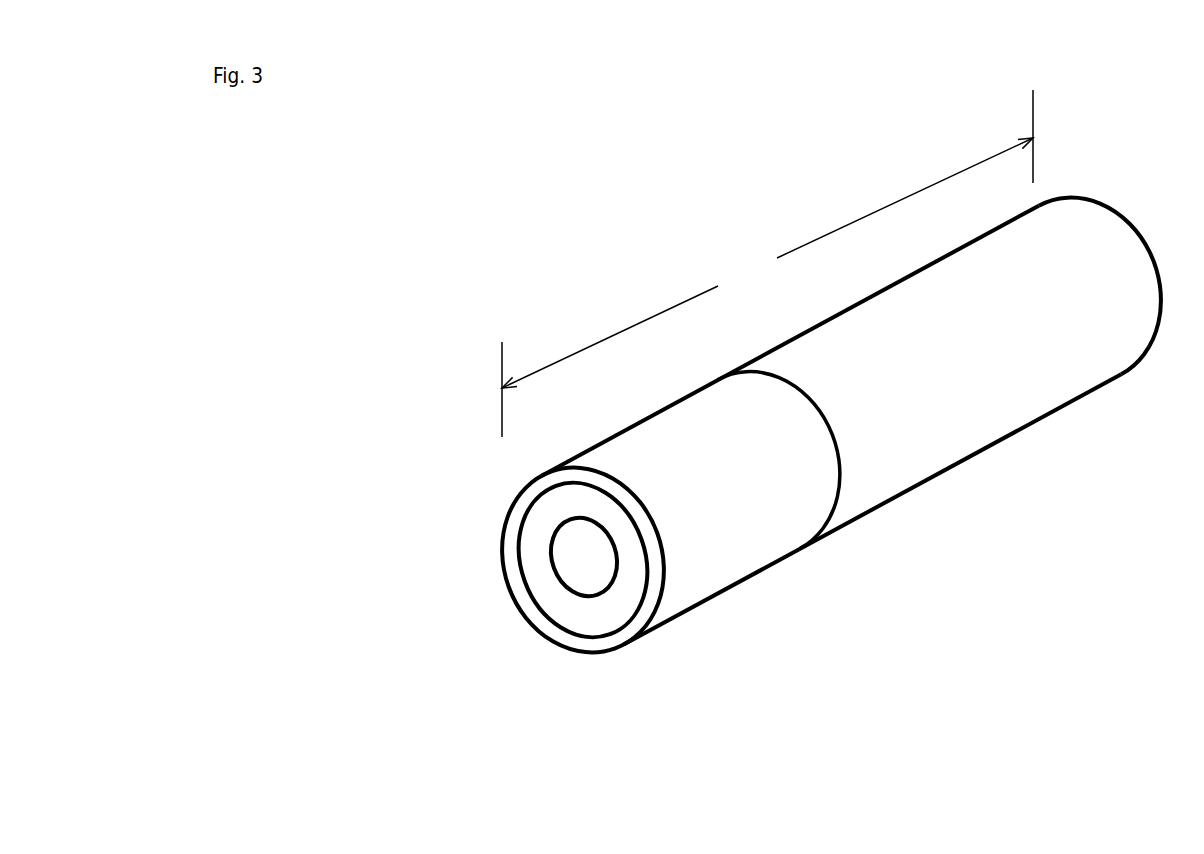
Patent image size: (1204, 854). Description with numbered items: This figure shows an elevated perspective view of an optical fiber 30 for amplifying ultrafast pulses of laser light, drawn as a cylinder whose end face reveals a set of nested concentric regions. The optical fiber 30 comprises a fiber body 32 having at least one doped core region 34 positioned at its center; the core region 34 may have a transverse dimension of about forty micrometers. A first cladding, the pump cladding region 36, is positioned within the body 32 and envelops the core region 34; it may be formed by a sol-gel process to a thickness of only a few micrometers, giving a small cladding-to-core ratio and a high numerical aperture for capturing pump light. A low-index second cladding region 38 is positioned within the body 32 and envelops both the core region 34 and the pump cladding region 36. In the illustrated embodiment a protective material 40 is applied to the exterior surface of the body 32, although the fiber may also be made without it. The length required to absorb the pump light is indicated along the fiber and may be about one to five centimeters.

The optical fiber 30 is at (600, 227).
The fiber body 32 is at (732, 518).
The core region 34 is at (587, 563).
The pump cladding region 36 is at (583, 610).
The second cladding region 38 is at (513, 530).
The protective material 40 is at (1012, 438).